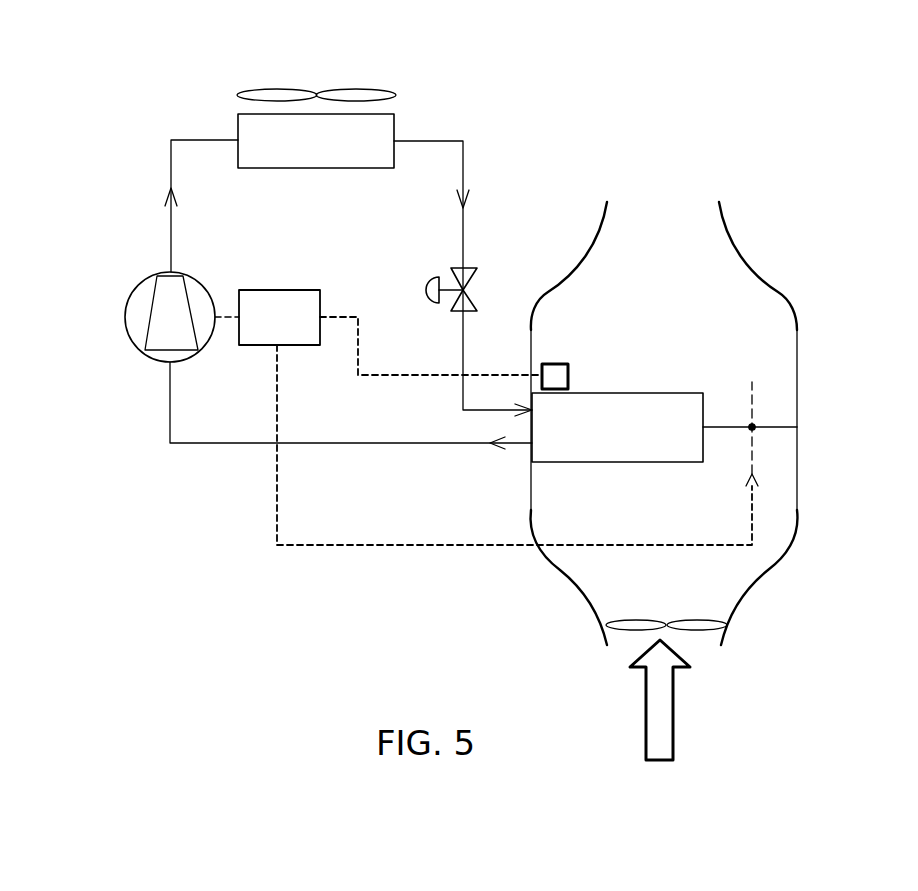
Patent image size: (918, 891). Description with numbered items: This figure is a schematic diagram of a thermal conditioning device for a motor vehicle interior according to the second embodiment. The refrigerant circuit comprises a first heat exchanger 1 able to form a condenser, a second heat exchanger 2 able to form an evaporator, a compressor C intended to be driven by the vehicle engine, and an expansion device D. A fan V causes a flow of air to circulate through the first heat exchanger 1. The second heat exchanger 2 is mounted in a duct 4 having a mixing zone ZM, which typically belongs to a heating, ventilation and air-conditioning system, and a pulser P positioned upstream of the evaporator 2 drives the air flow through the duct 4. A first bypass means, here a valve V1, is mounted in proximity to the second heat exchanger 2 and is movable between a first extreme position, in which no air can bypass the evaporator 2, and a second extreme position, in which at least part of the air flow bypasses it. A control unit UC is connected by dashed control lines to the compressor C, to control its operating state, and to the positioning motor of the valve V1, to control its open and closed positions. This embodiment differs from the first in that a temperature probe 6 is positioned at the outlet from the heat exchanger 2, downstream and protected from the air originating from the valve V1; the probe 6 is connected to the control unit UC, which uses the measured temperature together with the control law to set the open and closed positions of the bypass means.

The fan V is at (366, 90).
The first heat exchanger 1 is at (322, 151).
The compressor C is at (140, 318).
The control unit UC is at (279, 317).
The expansion device D is at (454, 310).
The duct 4 is at (798, 335).
The mixing zone ZM is at (665, 273).
The temperature probe 6 is at (551, 363).
The second heat exchanger 2 is at (608, 445).
The valve V1 is at (727, 430).
The pulser P is at (702, 630).